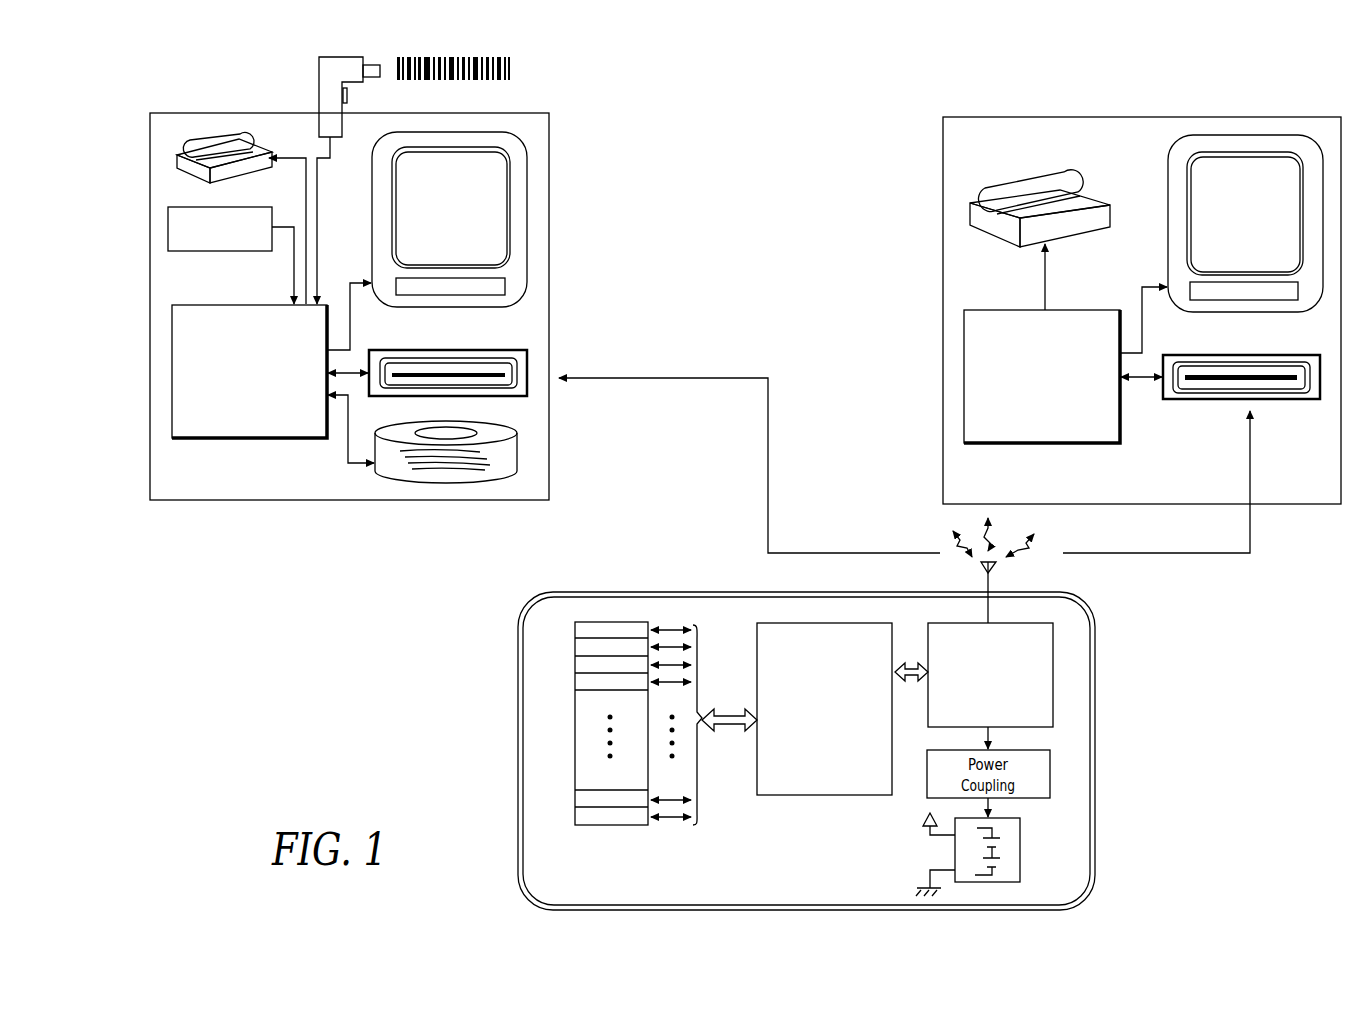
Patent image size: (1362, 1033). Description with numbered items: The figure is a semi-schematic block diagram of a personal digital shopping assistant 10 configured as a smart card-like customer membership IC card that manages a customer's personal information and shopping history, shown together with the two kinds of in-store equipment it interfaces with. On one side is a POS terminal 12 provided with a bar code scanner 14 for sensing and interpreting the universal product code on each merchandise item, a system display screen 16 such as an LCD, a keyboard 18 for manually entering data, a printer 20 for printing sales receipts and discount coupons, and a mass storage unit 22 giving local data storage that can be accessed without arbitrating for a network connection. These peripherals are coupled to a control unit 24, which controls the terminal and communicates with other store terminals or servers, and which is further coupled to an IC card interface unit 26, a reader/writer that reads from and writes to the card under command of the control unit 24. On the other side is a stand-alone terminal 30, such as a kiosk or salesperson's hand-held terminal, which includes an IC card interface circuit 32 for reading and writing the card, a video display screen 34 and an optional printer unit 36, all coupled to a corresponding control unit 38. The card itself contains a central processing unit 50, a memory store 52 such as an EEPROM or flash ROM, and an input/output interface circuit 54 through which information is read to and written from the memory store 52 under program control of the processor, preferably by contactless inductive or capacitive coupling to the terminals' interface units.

The personal digital shopping assistant 10 is at (518, 713).
The POS terminal 12 is at (312, 500).
The bar code scanner 14 is at (328, 72).
The system display screen 16 is at (518, 207).
The keyboard 18 is at (222, 245).
The printer 20 is at (210, 147).
The mass storage unit 22 is at (508, 458).
The control unit 24 is at (217, 433).
The IC card interface unit 26 is at (520, 363).
The stand-alone terminal 30 is at (943, 268).
The IC card interface circuit 32 is at (1210, 400).
The video display screen 34 is at (1175, 162).
The printer unit 36 is at (1005, 190).
The control unit 38 is at (1015, 432).
The central processing unit 50 is at (812, 795).
The memory store 52 is at (608, 822).
The input/output interface circuit 54 is at (1053, 675).